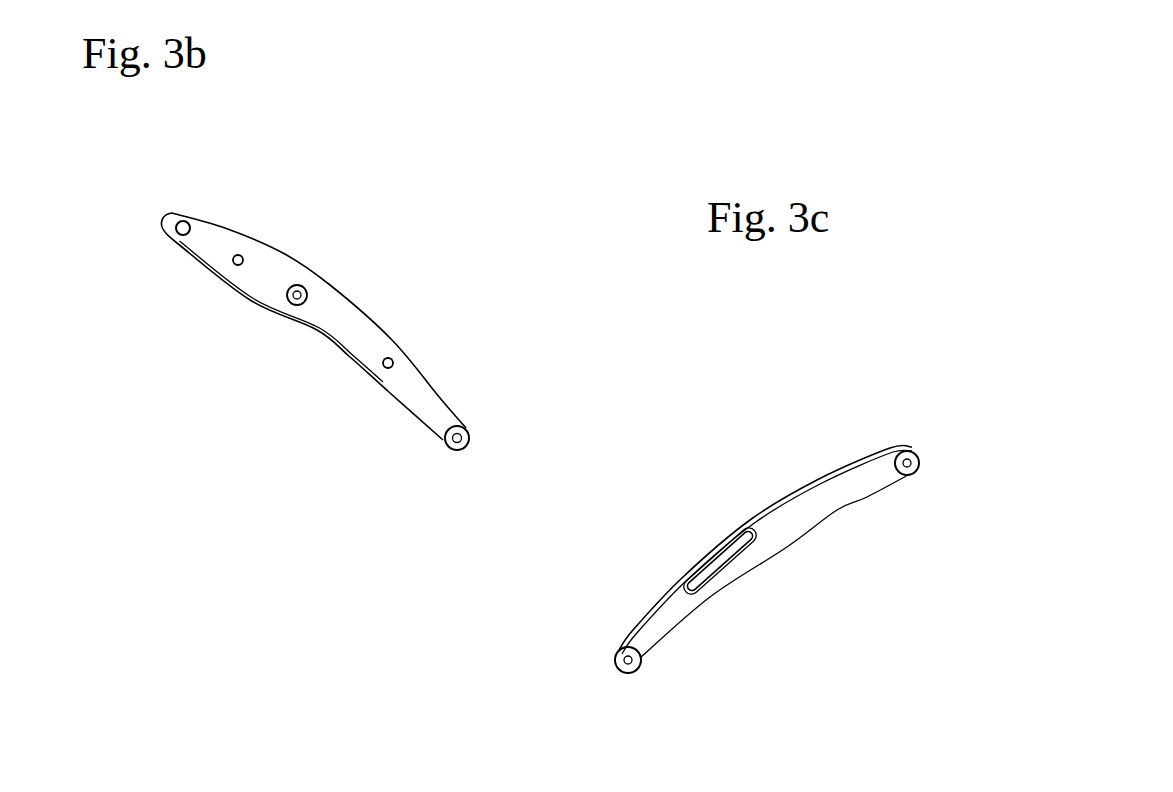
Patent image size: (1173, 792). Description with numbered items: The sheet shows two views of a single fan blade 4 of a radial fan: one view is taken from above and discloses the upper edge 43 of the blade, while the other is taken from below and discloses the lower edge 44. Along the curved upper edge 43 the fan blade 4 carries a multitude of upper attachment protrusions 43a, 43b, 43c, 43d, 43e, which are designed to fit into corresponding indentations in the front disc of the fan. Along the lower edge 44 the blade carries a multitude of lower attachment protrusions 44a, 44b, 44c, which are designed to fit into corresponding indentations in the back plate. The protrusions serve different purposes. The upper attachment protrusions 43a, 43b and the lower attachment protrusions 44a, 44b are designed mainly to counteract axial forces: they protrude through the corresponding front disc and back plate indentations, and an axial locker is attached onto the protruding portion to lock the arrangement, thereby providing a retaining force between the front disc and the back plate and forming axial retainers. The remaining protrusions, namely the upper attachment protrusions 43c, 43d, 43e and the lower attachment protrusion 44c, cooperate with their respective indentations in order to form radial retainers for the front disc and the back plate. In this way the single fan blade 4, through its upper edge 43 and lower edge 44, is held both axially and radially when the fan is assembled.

In FIG. 3b, the fan blade 4 is at (323, 150).
In FIG. 3c, the fan blade 4 is at (807, 373).
In FIG. 3b, the upper edge 43 is at (337, 315).
In FIG. 3b, the upper attachment protrusion 43a is at (447, 448).
In FIG. 3b, the upper attachment protrusion 43b is at (293, 302).
In FIG. 3b, the upper attachment protrusion 43c is at (383, 366).
In FIG. 3b, the upper attachment protrusion 43d is at (235, 263).
In FIG. 3b, the upper attachment protrusion 43e is at (168, 237).
In FIG. 3c, the lower edge 44 is at (822, 492).
In FIG. 3c, the lower attachment protrusion 44a is at (638, 658).
In FIG. 3c, the lower attachment protrusion 44b is at (908, 478).
In FIG. 3c, the lower attachment protrusion 44c is at (728, 567).